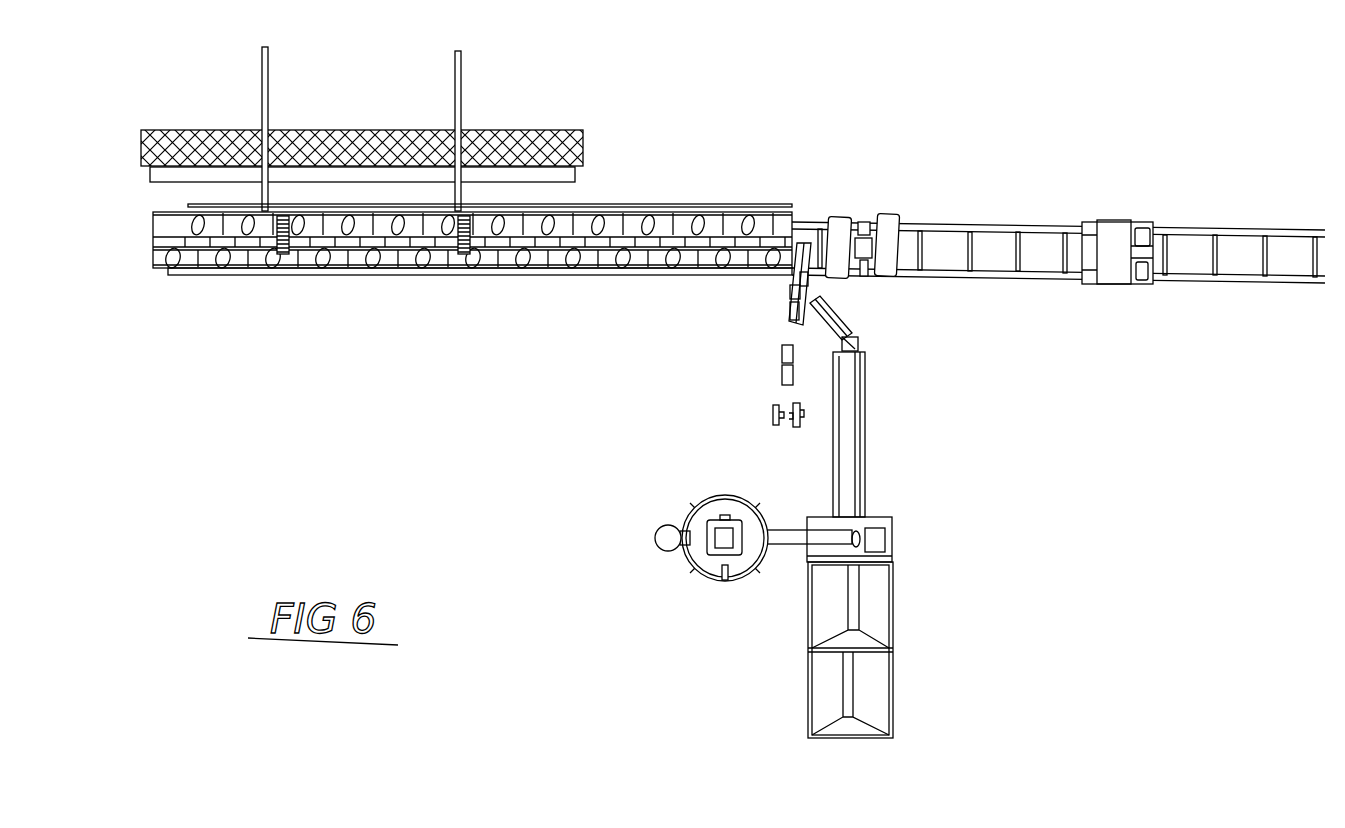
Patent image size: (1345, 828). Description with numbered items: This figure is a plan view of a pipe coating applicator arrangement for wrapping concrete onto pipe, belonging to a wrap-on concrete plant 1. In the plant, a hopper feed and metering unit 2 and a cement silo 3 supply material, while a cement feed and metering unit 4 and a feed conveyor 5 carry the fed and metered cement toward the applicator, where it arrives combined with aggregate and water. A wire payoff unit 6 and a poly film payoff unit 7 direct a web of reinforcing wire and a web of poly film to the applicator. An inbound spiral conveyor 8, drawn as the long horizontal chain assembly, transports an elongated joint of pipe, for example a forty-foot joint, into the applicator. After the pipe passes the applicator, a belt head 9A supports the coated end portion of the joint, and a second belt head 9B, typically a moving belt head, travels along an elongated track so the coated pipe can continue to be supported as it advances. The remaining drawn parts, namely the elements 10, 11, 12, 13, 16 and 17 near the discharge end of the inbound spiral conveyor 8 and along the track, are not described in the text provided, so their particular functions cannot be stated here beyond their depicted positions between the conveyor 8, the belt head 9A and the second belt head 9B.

The concrete plant 1 is at (955, 656).
The hopper feed and metering unit 2 is at (823, 618).
The cement silo 3 is at (718, 495).
The cement feed and metering unit 4 is at (880, 518).
The feed conveyor 5 is at (847, 452).
The wire payoff unit 6 is at (770, 412).
The poly film payoff unit 7 is at (780, 368).
The inbound spiral conveyor 8 is at (507, 277).
The belt head 9A is at (888, 216).
The second belt head 9B is at (1104, 222).
The guide bar 10 is at (787, 303).
The inclined arm 11 is at (842, 326).
The pivot block 12 is at (856, 342).
The rail 13 is at (1033, 275).
The mounting bracket 16 is at (787, 287).
The stop 17 is at (806, 283).